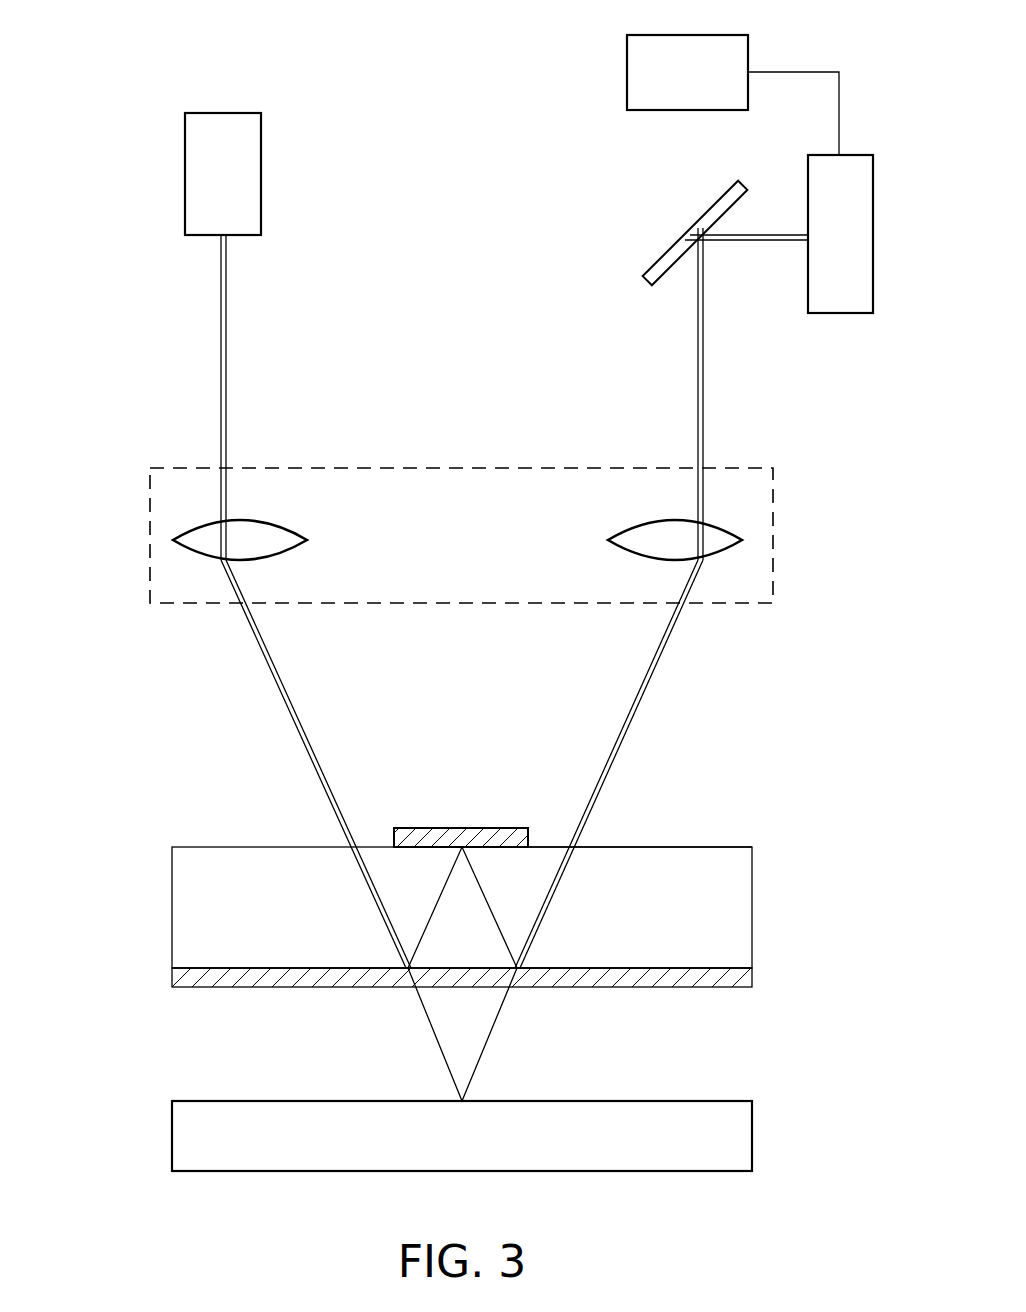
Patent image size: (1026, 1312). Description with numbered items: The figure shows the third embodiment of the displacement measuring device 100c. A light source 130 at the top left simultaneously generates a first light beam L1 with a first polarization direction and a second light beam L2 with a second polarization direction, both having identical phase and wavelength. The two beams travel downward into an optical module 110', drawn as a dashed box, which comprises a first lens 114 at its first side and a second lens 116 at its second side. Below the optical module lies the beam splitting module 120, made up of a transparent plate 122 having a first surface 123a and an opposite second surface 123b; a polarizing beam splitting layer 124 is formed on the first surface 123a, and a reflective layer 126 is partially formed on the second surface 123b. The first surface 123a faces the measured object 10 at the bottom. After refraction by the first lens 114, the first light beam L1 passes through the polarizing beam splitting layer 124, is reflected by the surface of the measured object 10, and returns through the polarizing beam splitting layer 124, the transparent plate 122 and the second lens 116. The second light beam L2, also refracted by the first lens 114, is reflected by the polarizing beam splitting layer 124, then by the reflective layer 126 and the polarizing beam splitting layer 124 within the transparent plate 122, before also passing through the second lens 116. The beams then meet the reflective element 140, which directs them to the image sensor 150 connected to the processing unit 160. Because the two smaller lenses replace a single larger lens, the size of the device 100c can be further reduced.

The displacement measuring device 100c is at (163, 60).
The light source 130 is at (223, 174).
The processing unit 160 is at (687, 72).
The image sensor 150 is at (840, 234).
The reflective element 140 is at (676, 241).
The first light beam L1 is at (217, 364).
The second light beam L2 is at (231, 364).
The optical module 110' is at (430, 515).
The first lens 114 is at (291, 527).
The second lens 116 is at (623, 527).
The beam splitting module 120 is at (170, 822).
The transparent plate 122 is at (182, 914).
The polarizing beam splitting layer 124 is at (270, 975).
The reflective layer 126 is at (462, 830).
The first surface 123a is at (728, 960).
The second surface 123b is at (726, 838).
The measured object 10 is at (462, 1136).